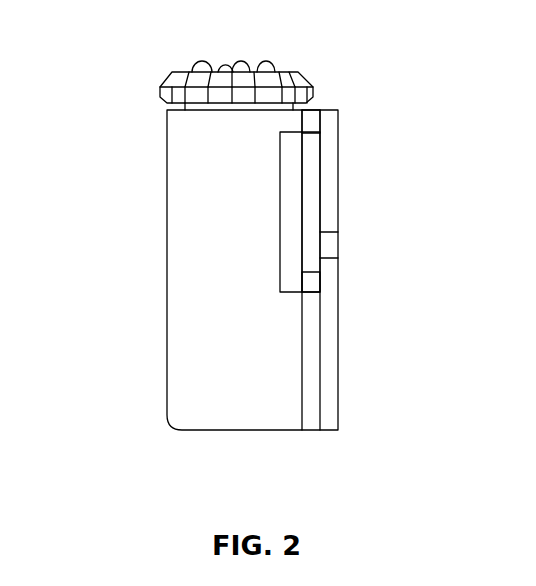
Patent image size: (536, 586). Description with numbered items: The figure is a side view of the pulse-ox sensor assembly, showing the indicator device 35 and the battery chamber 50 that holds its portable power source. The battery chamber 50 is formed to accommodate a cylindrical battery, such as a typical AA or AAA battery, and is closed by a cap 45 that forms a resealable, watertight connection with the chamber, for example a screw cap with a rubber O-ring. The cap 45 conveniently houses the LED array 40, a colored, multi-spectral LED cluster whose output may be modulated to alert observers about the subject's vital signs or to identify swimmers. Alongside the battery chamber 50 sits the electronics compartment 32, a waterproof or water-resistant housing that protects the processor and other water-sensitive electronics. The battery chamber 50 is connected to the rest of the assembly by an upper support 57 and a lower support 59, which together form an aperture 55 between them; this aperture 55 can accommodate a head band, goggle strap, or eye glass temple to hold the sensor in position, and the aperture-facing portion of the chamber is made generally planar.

The indicator device 35 is at (161, 58).
The LED array 40 is at (272, 54).
The cap 45 is at (307, 80).
The battery chamber 50 is at (208, 273).
The aperture 55 is at (310, 183).
The upper support 57 is at (310, 120).
The lower support 59 is at (308, 280).
The electronics compartment 32 is at (308, 408).